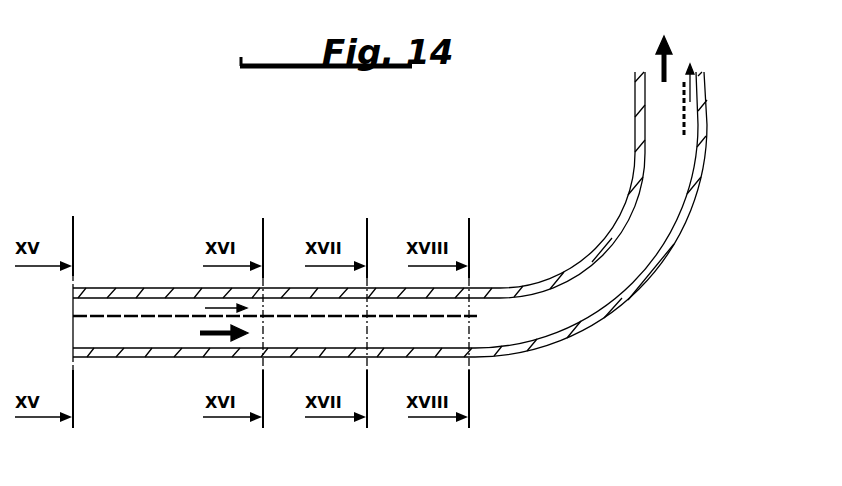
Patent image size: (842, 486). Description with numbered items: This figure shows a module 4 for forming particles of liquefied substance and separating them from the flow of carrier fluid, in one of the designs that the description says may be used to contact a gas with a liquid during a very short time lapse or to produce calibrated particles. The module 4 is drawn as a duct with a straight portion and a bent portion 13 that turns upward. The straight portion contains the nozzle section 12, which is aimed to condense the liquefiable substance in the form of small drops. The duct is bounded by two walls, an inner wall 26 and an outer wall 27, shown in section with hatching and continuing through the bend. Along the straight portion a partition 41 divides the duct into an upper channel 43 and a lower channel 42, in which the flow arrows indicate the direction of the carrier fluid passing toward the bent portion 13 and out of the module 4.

The module 4 is at (215, 170).
The nozzle section 12 is at (194, 379).
The bent tube section 13 is at (570, 190).
The inner tube wall 26 is at (530, 278).
The outer tube wall 27 is at (575, 333).
The partition wall 41 is at (399, 315).
The lower flow channel 42 is at (380, 332).
The upper flow channel 43 is at (152, 307).